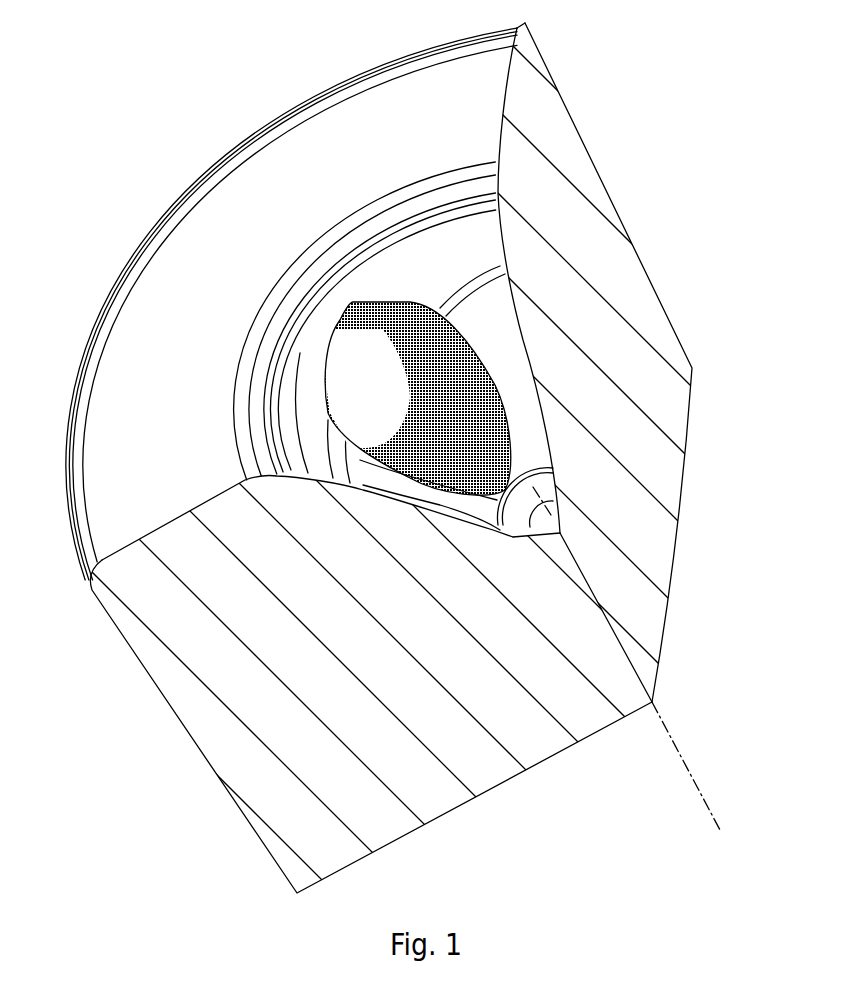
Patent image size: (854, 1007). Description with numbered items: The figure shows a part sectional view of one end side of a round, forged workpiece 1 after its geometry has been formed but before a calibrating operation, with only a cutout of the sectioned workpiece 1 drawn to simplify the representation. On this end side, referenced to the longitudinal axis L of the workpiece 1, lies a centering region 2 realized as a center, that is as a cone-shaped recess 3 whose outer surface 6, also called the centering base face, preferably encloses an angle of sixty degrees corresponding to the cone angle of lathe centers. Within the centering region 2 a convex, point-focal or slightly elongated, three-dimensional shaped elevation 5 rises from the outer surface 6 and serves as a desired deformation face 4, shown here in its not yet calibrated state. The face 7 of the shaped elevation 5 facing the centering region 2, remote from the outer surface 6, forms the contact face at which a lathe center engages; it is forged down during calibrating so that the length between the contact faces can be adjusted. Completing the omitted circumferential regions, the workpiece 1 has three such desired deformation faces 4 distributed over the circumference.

The workpiece 1 is at (609, 102).
The centering region 2 is at (380, 323).
The outer surface 6 is at (412, 252).
The cone-shaped recess 3 is at (328, 265).
The desired deformation face 4 is at (356, 417).
The shaped elevation 5 is at (378, 367).
The face 7 is at (470, 382).
The longitudinal axis L is at (695, 778).